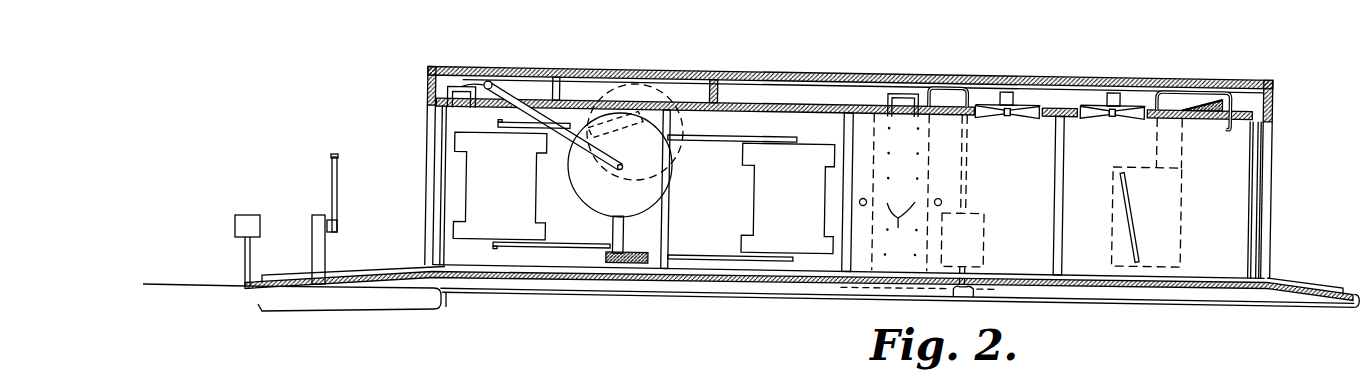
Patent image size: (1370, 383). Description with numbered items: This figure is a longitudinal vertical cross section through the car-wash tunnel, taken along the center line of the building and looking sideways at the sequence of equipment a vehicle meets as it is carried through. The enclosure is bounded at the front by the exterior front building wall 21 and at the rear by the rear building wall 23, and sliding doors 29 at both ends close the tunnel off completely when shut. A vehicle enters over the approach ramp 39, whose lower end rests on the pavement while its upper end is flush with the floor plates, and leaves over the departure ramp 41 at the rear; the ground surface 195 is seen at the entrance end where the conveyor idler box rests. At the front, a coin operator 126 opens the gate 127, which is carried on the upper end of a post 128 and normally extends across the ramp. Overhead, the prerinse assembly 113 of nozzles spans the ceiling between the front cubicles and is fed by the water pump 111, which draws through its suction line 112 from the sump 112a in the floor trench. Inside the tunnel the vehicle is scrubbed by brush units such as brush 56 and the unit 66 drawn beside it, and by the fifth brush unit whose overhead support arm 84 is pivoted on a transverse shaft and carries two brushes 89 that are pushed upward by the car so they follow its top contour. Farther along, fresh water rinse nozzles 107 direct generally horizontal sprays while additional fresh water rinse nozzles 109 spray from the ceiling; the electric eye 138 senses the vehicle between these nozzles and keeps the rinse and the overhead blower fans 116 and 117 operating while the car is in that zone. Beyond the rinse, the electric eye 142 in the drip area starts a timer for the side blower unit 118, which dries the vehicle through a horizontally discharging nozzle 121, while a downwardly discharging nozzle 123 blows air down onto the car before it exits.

The exterior front building wall 21 is at (428, 97).
The rear building wall 23 is at (1272, 101).
The sliding doors 29 is at (435, 137).
The approach ramp 39 is at (367, 274).
The departure ramp 41 is at (1305, 287).
The brush 56 is at (793, 204).
The drive unit 66 is at (506, 194).
The overhead support arm 84 is at (600, 153).
The brushes 89 is at (619, 200).
The fresh water rinse nozzles 107 is at (902, 227).
The fresh water rinse nozzles 109 is at (906, 94).
The water pump 111 is at (982, 213).
The suction line 112 is at (968, 296).
The sump 112a is at (953, 296).
The prerinse assembly 113 is at (455, 84).
The overhead blower fan 116 is at (1023, 118).
The overhead blower fan 117 is at (1128, 118).
The blower unit 118 is at (1170, 223).
The horizontally discharging nozzle 121 is at (1131, 220).
The downwardly discharging nozzle 123 is at (1225, 128).
The coin operator 126 is at (243, 214).
The gate 127 is at (338, 172).
The post 128 is at (318, 215).
The electric eye 138 is at (865, 191).
The electric eye 142 is at (940, 198).
The ground surface 195 is at (208, 284).